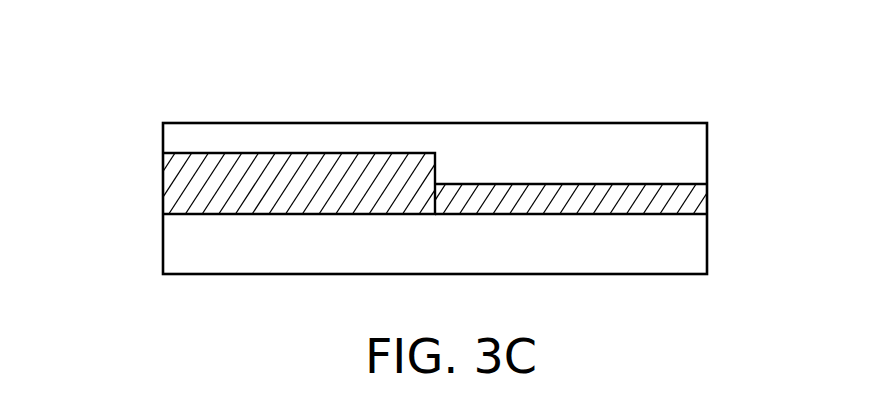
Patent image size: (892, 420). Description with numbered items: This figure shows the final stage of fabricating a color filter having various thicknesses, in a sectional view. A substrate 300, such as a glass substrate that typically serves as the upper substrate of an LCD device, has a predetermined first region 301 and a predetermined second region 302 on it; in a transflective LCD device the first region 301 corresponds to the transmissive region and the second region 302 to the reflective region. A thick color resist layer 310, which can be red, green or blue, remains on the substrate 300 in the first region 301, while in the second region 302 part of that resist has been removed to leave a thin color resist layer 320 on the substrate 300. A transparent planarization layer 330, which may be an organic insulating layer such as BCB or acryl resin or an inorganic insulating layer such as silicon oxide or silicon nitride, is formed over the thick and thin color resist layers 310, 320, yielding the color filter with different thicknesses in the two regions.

The substrate 300 is at (683, 235).
The first region 301 is at (435, 77).
The second region 302 is at (707, 77).
The thick color resist layer 310 is at (188, 187).
The thin color resist layer 320 is at (683, 197).
The transparent planarization layer 330 is at (683, 145).